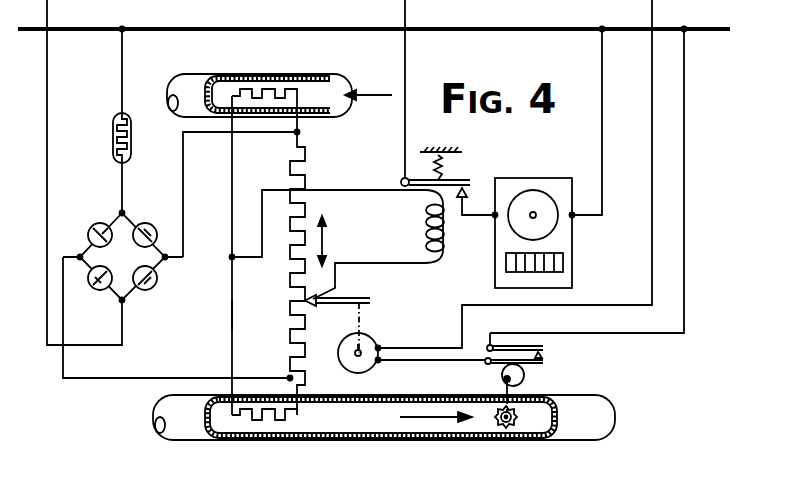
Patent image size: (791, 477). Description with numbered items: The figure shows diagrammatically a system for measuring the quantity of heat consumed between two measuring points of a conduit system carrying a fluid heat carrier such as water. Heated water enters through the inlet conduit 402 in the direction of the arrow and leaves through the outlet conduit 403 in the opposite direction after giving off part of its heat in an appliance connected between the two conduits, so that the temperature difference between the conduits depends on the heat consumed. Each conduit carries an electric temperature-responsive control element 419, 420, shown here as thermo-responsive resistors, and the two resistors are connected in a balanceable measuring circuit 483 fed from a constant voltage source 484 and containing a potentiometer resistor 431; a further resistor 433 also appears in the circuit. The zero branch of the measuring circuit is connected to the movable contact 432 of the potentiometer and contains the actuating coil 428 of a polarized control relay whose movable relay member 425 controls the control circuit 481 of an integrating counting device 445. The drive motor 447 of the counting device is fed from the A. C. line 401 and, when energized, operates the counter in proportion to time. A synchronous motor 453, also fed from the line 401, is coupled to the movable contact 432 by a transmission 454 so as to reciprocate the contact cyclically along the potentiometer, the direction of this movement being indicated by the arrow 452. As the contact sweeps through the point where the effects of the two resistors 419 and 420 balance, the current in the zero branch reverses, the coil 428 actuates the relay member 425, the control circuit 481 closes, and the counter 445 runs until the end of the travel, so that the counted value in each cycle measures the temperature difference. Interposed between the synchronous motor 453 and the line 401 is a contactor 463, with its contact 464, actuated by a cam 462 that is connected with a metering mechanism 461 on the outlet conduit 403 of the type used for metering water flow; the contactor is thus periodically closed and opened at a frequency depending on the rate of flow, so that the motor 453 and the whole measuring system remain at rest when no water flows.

The A. C. line 401 is at (374, 14).
The inlet conduit 402 is at (228, 74).
The outlet conduit 403 is at (380, 442).
The temperature-responsive control element 419 is at (276, 88).
The temperature-responsive control element 420 is at (258, 440).
The relay member 425 is at (458, 178).
The actuating coil 428 is at (444, 231).
The potentiometer resistor 431 is at (290, 311).
The movable contact 432 is at (311, 303).
The resistor 433 is at (113, 135).
The integrating counting device 445 is at (567, 282).
The drive motor 447 is at (538, 198).
The adjustment direction arrow 452 is at (330, 236).
The synchronous motor 453 is at (363, 368).
The transmission 454 is at (361, 329).
The metering mechanism 461 is at (506, 430).
The cam 462 is at (525, 375).
The contactor 463 is at (543, 351).
The switch lower contact 464 is at (495, 373).
The control circuit 481 is at (405, 58).
The balanceable measuring circuit 483 is at (231, 312).
The constant voltage source 484 is at (118, 230).